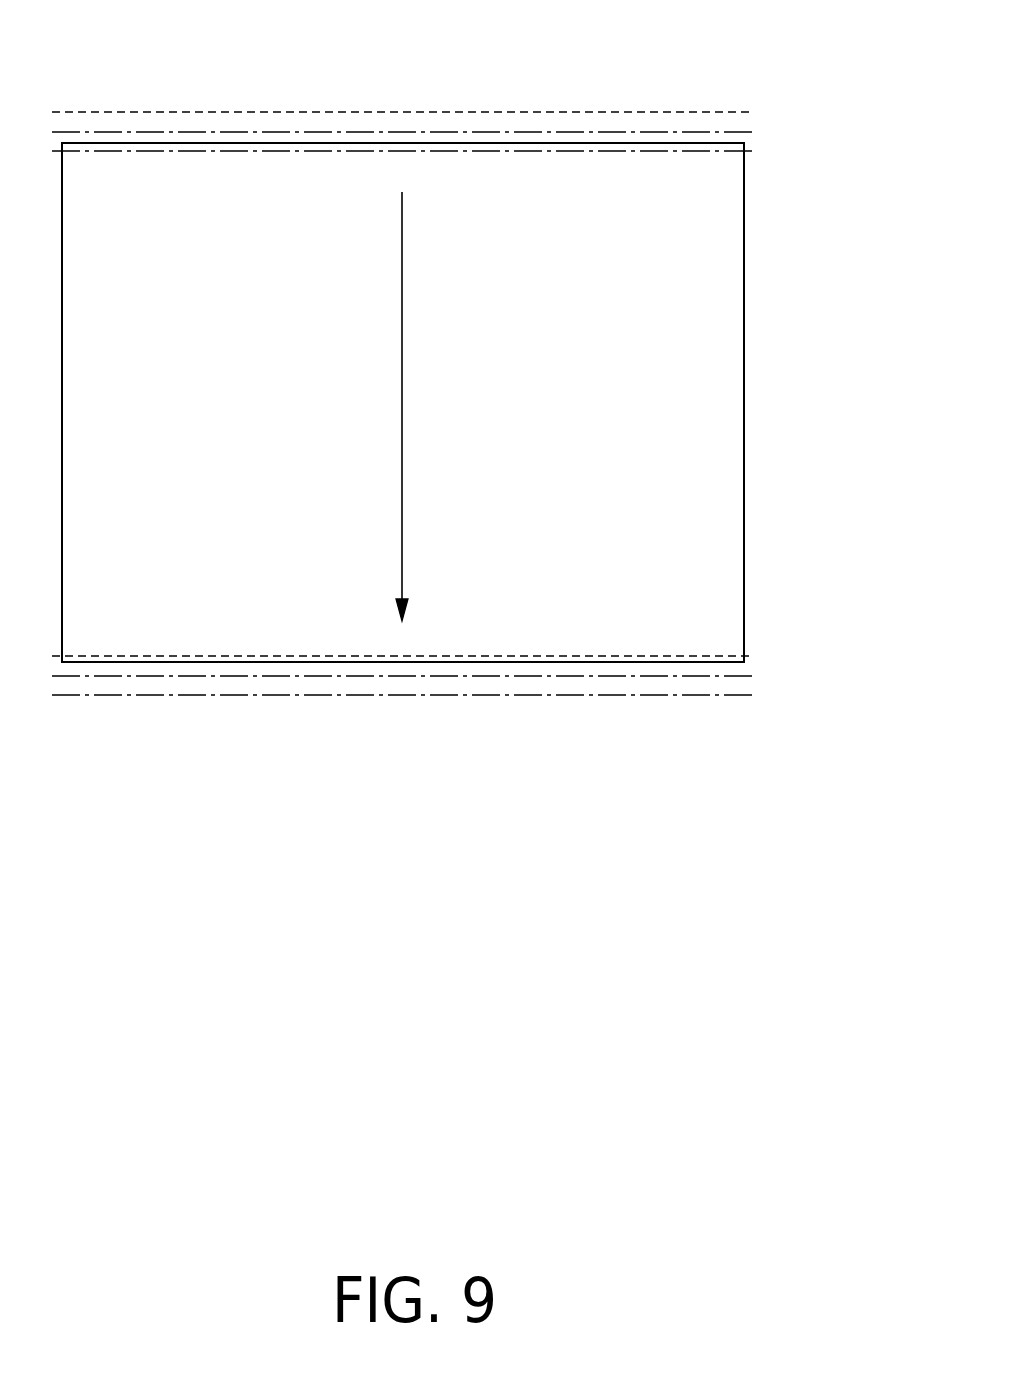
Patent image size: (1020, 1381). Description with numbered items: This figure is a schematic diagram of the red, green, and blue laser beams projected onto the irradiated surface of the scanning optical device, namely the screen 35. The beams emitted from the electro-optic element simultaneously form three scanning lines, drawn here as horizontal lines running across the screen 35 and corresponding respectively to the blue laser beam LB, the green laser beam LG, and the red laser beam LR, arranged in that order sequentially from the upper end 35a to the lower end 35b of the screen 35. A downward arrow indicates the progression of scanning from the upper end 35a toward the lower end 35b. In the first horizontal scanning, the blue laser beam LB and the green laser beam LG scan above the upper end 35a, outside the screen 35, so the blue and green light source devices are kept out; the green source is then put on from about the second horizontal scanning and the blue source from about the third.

The screen 35 is at (745, 290).
The upper end of the screen 35a is at (743, 141).
The lower end of the screen 35b is at (723, 665).
The red laser beam LR is at (432, 151).
The green laser beam LG is at (522, 132).
The blue laser beam LB is at (608, 113).